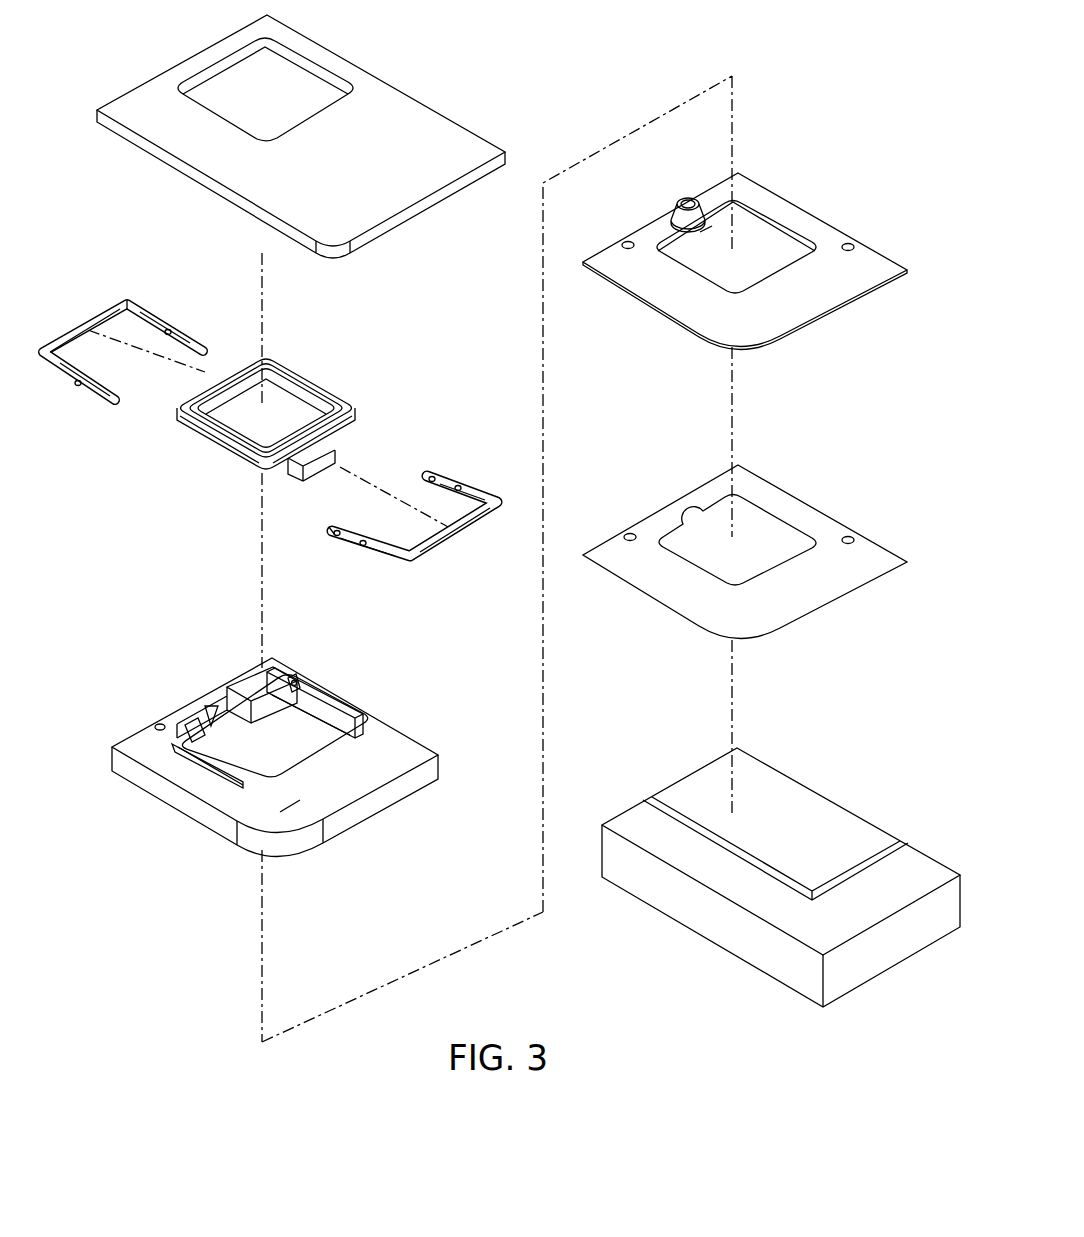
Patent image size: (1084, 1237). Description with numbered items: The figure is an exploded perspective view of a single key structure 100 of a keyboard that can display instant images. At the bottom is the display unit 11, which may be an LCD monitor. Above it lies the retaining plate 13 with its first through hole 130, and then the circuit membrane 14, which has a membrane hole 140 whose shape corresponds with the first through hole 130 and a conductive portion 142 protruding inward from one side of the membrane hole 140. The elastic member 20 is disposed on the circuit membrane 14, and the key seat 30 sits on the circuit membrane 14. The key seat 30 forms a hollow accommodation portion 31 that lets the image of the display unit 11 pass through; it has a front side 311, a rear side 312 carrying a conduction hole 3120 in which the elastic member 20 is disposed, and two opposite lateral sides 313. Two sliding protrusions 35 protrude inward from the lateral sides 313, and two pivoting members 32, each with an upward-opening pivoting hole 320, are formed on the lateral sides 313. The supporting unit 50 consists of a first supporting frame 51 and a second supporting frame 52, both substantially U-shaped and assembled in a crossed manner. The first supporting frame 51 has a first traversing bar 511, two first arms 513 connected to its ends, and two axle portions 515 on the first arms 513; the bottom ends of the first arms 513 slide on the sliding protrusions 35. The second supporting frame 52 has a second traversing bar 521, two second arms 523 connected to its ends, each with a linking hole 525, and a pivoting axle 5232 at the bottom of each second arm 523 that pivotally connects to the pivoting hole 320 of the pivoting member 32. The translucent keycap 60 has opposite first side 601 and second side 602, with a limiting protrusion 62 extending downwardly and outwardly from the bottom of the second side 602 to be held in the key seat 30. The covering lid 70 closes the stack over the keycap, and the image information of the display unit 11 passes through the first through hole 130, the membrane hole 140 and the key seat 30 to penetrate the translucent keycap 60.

The key structure 100 is at (824, 74).
The covering lid 70 is at (410, 98).
The supporting unit 50 is at (477, 343).
The first supporting frame 51 is at (141, 336).
The first traversing bar 511 is at (80, 320).
The first arms 513 is at (154, 312).
The axle portions 515 is at (171, 323).
The second supporting frame 52 is at (406, 508).
The second traversing bar 521 is at (467, 527).
The second arms 523 is at (370, 537).
The pivoting axle 5232 is at (332, 533).
The linking holes 525 is at (367, 551).
The translucent keycap 60 is at (283, 412).
The first side 601 is at (227, 367).
The second side 602 is at (327, 408).
The limiting protrusion 62 is at (320, 478).
The key seat 30 is at (299, 752).
The accommodation portion 31 is at (369, 721).
The front side 311 is at (297, 772).
The rear side 312 is at (242, 683).
The conduction hole 3120 is at (200, 702).
The lateral sides 313 is at (340, 717).
The pivoting members 32 is at (323, 692).
The pivoting hole 320 is at (303, 675).
The sliding protrusions 35 is at (303, 730).
The circuit membrane 14 is at (746, 248).
The membrane holes 140 is at (773, 216).
The conductive portions 142 is at (707, 232).
The elastic member 20 is at (683, 197).
The retaining plate 13 is at (745, 541).
The first through holes 130 is at (783, 511).
The display unit 11 is at (831, 807).